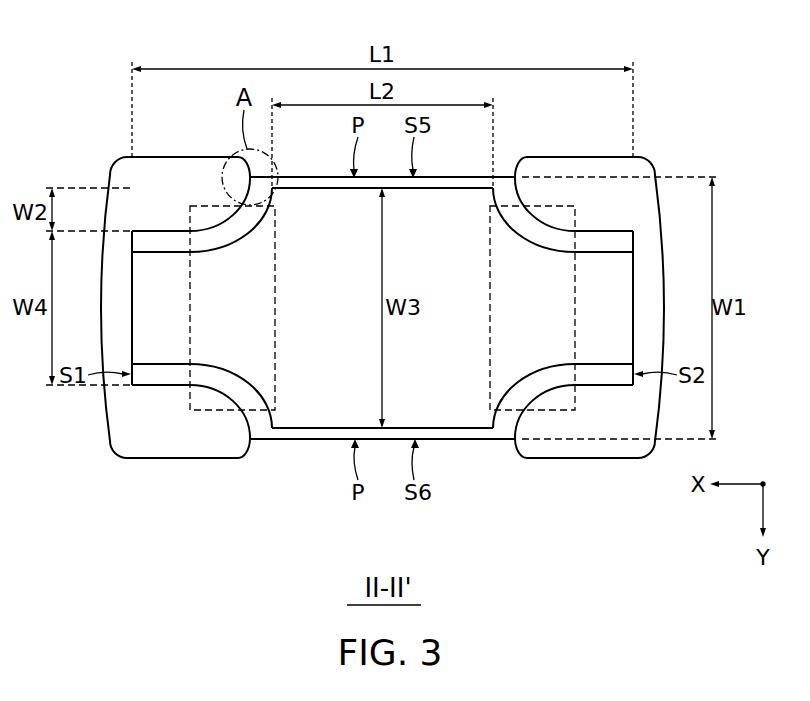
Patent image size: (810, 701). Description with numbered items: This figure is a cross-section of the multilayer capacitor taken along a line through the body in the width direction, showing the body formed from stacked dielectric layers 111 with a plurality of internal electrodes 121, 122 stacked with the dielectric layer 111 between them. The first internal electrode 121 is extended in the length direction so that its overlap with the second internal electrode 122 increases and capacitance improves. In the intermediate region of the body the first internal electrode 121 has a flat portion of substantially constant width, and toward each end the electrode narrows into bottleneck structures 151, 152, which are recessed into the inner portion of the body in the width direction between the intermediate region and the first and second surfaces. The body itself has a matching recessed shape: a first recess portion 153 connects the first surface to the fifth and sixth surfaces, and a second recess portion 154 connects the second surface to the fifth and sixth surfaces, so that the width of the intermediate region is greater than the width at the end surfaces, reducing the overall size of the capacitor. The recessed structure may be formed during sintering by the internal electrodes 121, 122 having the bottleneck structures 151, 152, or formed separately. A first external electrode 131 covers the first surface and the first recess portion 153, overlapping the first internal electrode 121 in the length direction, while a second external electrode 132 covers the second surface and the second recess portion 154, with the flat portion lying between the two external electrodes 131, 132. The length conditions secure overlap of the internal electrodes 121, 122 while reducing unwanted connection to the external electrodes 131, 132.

The dielectric layer 111 is at (310, 187).
The first internal electrode 121 is at (333, 410).
The second internal electrode 122 is at (600, 350).
The first external electrode 131 is at (175, 168).
The second external electrode 132 is at (585, 168).
The bottleneck structure 151 is at (252, 412).
The bottleneck structure 152 is at (513, 412).
The first recess portion 153 is at (222, 216).
The second recess portion 154 is at (545, 216).